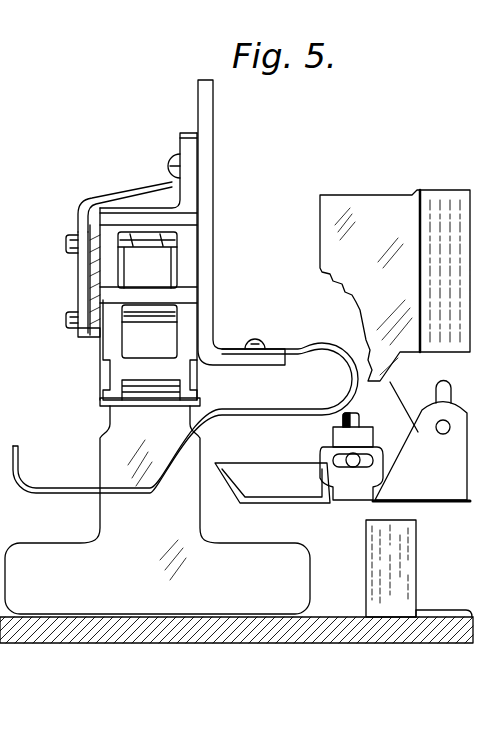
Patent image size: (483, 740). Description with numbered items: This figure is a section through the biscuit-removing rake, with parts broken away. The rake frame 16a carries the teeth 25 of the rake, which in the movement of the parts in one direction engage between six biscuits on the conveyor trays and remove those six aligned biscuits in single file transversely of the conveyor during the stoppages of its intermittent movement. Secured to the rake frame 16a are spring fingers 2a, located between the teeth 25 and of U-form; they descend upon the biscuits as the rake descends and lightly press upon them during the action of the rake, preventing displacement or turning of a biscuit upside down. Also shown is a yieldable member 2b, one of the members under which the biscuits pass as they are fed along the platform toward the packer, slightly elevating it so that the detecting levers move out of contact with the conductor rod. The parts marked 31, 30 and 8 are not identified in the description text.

The rake frame 16a is at (209, 236).
The roller 31 is at (181, 240).
The clamping nut 30 is at (67, 321).
The spring fingers 2a is at (15, 462).
The yieldable members 2b is at (303, 503).
The teeth of the rake 25 is at (157, 510).
The support 8 is at (4, 515).